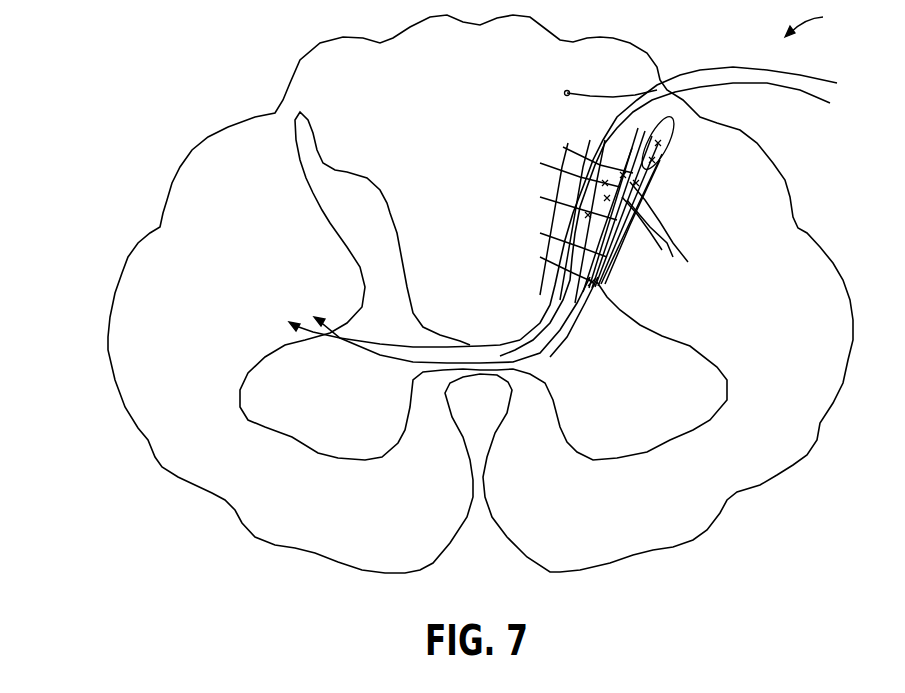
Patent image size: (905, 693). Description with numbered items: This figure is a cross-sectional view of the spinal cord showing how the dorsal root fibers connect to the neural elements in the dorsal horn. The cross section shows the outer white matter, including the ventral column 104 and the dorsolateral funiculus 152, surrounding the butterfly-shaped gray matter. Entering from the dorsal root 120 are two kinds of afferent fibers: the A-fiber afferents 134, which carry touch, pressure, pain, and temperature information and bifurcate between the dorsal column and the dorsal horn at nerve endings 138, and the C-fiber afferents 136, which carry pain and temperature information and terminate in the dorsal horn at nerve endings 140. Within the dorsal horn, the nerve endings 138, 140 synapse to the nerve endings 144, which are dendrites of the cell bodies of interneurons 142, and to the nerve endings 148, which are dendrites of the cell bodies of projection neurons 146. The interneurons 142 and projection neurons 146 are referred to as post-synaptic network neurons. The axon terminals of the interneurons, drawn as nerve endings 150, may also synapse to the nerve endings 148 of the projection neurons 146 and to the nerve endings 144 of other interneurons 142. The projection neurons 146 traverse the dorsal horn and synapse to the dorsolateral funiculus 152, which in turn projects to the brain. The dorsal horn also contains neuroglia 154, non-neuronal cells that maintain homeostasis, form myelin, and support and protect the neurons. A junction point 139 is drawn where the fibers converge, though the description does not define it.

The ventral column 104 is at (491, 116).
The dorsal root 120 is at (825, 22).
The A-fiber afferents 134 is at (678, 175).
The C-fiber afferents 136 is at (665, 219).
The nerve endings (axon terminals) 138 is at (625, 139).
The junction point 139 is at (543, 294).
The nerve endings (axon terminals) 140 is at (659, 220).
The interneurons 142 is at (554, 221).
The nerve endings (dendrites of cell bodies) 144 is at (547, 219).
The projection neurons 146 is at (460, 331).
The nerve endings (dendrites of cell bodies) 148 is at (659, 220).
The nerve endings (axon terminals) 150 is at (584, 214).
The dorsolateral funiculus 152 is at (477, 294).
The neuroglia 154 is at (685, 213).